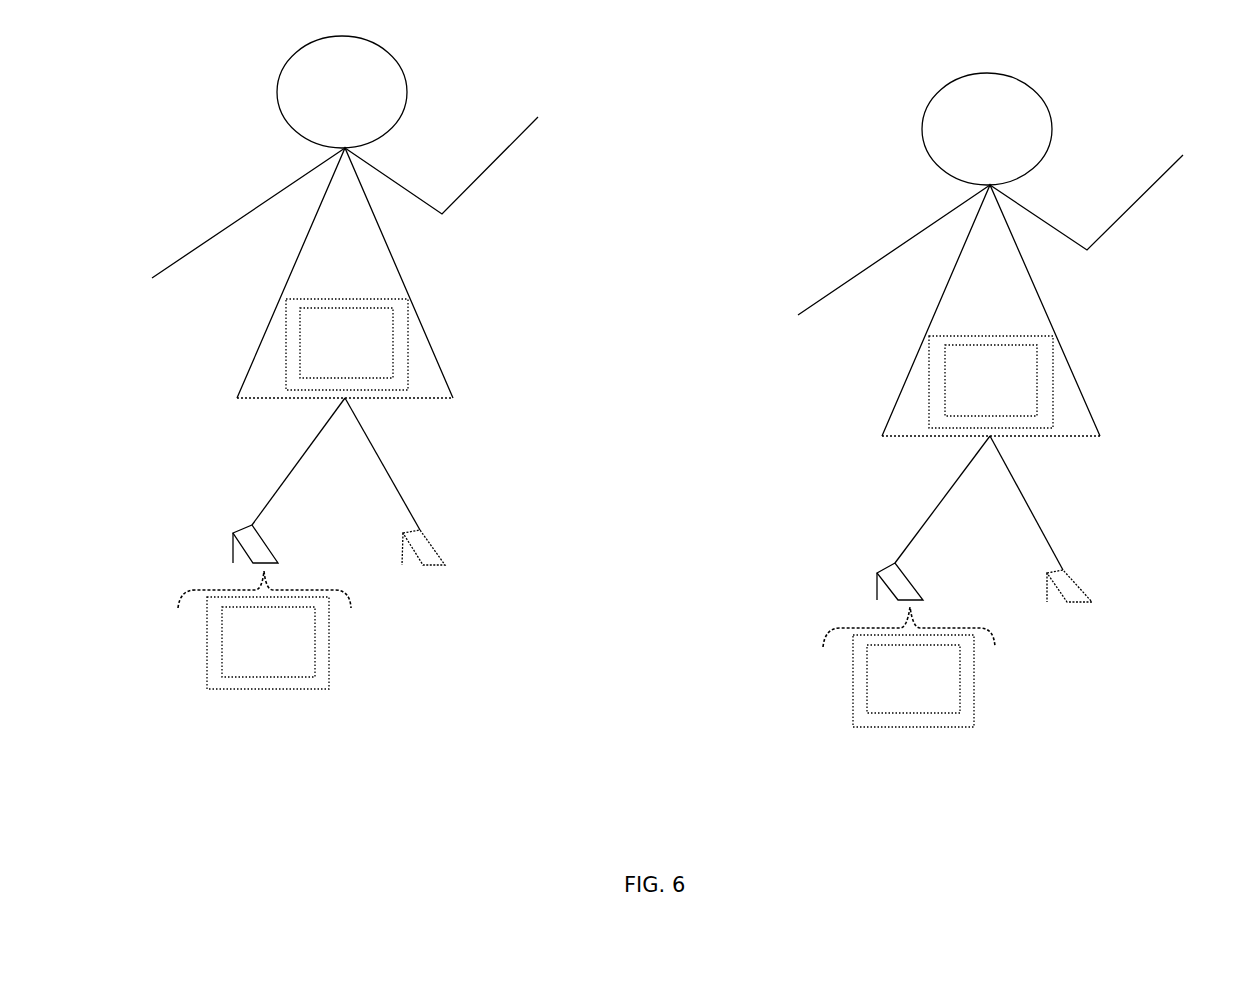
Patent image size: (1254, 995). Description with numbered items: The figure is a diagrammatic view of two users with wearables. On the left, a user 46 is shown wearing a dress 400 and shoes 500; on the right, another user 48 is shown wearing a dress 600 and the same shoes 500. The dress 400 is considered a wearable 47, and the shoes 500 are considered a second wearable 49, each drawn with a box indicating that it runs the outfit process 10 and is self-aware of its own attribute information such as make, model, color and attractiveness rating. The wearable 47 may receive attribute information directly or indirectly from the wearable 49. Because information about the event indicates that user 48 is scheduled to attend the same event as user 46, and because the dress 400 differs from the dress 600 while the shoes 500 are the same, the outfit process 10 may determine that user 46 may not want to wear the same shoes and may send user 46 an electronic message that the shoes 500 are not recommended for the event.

The user 46 is at (227, 80).
The user 48 is at (872, 118).
The dress 400 is at (290, 270).
The dress 600 is at (937, 309).
The wearable 47 is at (286, 357).
The shoes 500 is at (233, 534).
The wearable 49 is at (207, 656).
The outfit process 10 is at (629, 510).